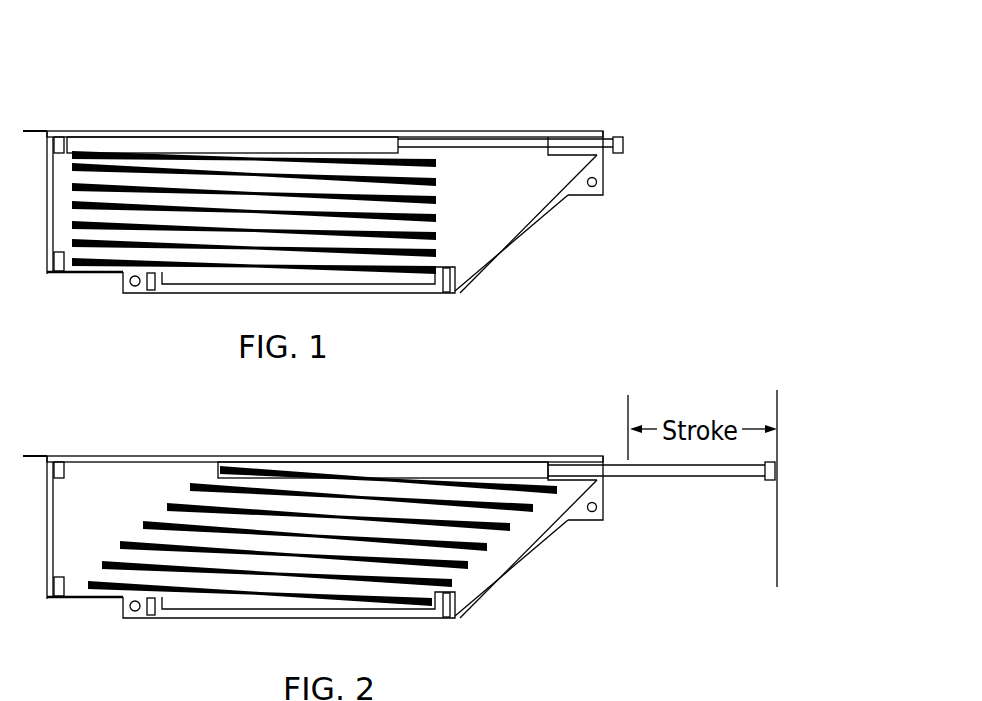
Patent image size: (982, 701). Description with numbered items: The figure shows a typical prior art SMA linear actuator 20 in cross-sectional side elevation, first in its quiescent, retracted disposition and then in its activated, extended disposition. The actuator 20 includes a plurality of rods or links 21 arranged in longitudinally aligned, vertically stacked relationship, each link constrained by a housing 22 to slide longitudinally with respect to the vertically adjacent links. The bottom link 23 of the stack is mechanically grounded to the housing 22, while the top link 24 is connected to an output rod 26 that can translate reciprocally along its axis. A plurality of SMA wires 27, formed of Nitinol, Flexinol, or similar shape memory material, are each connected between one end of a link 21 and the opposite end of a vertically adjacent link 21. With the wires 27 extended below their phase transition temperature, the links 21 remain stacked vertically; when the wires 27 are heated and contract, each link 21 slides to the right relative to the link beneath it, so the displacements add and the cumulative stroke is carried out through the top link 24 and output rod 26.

The SMA linear actuator 20 is at (182, 108).
The links 21 is at (247, 164).
The housing 22 is at (512, 248).
The bottom link 23 is at (398, 290).
The top link 24 is at (369, 143).
The output rod 26 is at (501, 140).
The SMA wires 27 is at (127, 235).